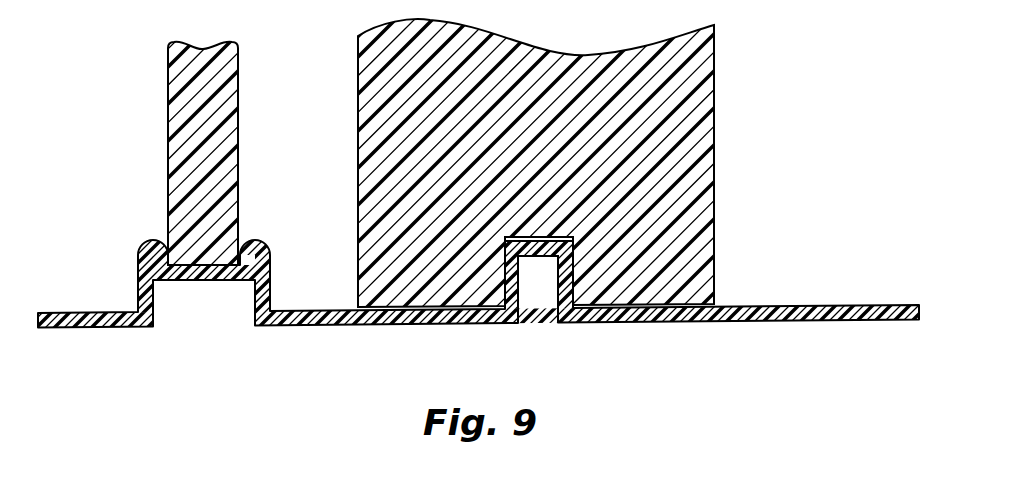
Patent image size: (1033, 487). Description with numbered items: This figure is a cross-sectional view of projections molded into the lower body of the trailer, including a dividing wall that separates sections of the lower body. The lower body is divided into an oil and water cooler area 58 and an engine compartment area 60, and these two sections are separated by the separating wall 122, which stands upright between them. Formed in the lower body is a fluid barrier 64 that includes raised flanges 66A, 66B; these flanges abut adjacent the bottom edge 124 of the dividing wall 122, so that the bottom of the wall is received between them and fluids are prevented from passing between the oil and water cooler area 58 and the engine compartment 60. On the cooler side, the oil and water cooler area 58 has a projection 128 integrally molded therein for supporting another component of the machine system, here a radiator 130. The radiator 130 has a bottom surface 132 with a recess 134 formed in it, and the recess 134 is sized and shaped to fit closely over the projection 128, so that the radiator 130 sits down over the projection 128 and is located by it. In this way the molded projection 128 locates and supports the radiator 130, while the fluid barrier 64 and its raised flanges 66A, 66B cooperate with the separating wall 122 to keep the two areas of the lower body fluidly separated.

The oil and water cooler area 58 is at (318, 293).
The engine compartment area 60 is at (514, 262).
The fluid barrier 64 is at (137, 282).
The raised flange 66A is at (148, 243).
The raised flange 66B is at (258, 243).
The separating wall 122 is at (178, 83).
The bottom edge 124 is at (206, 282).
The projection 128 is at (546, 243).
The radiator 130 is at (697, 98).
The bottom surface 132 is at (681, 309).
The recess 134 is at (534, 259).